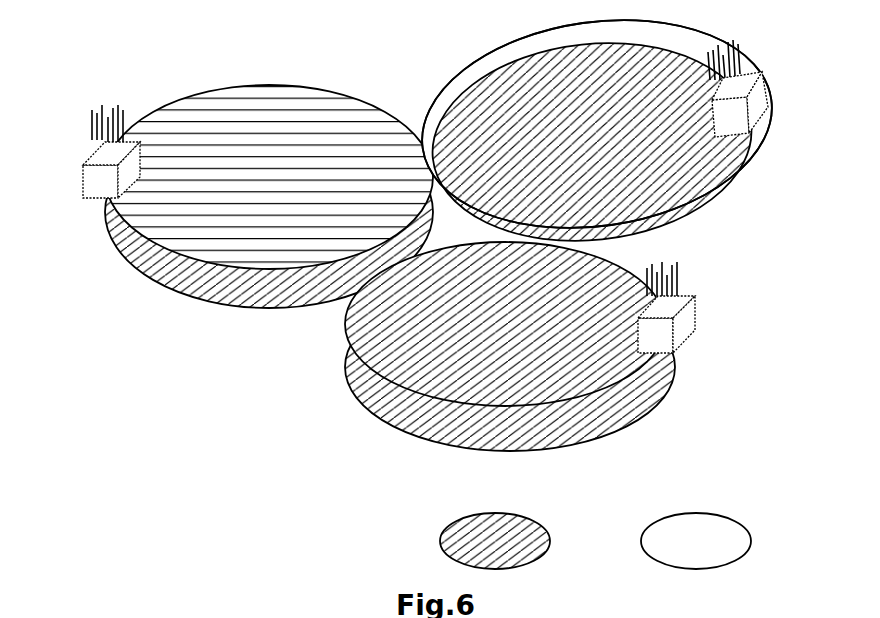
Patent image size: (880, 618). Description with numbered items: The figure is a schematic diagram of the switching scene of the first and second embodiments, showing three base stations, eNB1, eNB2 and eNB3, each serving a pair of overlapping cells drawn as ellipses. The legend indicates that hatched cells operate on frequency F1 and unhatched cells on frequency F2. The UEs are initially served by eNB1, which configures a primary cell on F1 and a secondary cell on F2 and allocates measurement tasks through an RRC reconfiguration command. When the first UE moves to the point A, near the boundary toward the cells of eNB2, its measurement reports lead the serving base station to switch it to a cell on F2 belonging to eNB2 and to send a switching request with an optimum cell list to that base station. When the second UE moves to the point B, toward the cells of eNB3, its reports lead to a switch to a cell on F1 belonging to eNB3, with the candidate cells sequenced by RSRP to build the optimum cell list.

The base station eNB1 is at (89, 134).
The base station 2 eNB2 is at (694, 307).
The base station 3 eNB3 is at (765, 88).
The point A is at (349, 251).
The point B is at (408, 201).
The frequency F1 is at (519, 541).
The frequency F2 is at (717, 541).